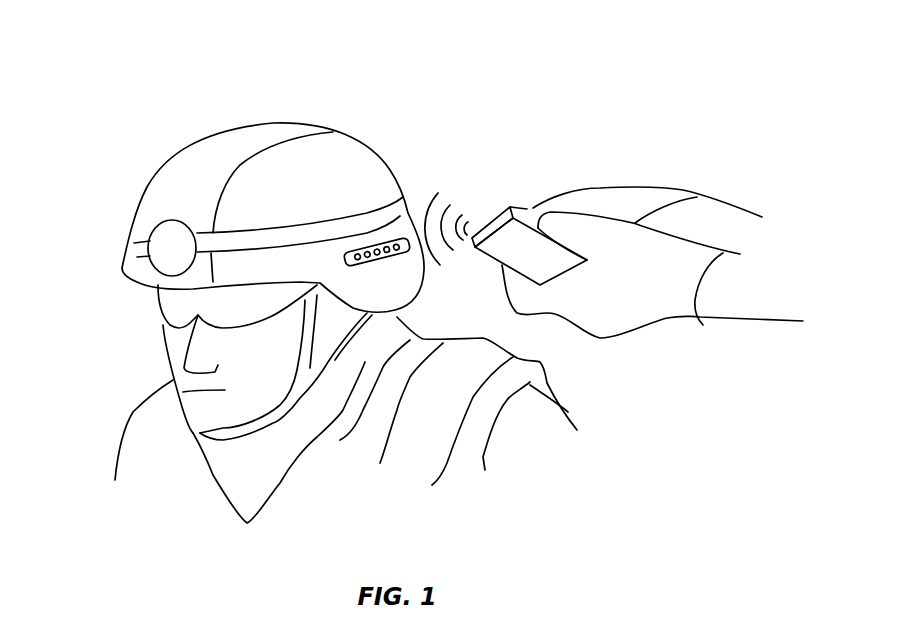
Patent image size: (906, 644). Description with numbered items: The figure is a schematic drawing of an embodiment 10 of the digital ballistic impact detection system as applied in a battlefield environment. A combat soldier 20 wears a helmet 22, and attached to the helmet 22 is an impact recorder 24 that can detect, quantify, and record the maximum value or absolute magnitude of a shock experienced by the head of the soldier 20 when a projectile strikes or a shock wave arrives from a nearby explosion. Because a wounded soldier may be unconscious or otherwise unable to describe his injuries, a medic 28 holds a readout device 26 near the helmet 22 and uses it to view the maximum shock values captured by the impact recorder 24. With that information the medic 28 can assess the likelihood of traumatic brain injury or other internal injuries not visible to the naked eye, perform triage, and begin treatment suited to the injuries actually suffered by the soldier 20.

The embodiment of the digital ballistic impact detection system 10 is at (95, 100).
The combat soldier 20 is at (132, 412).
The helmet 22 is at (207, 135).
The impact recorder 24 is at (398, 233).
The readout device 26 is at (523, 208).
The medic 28 is at (720, 320).